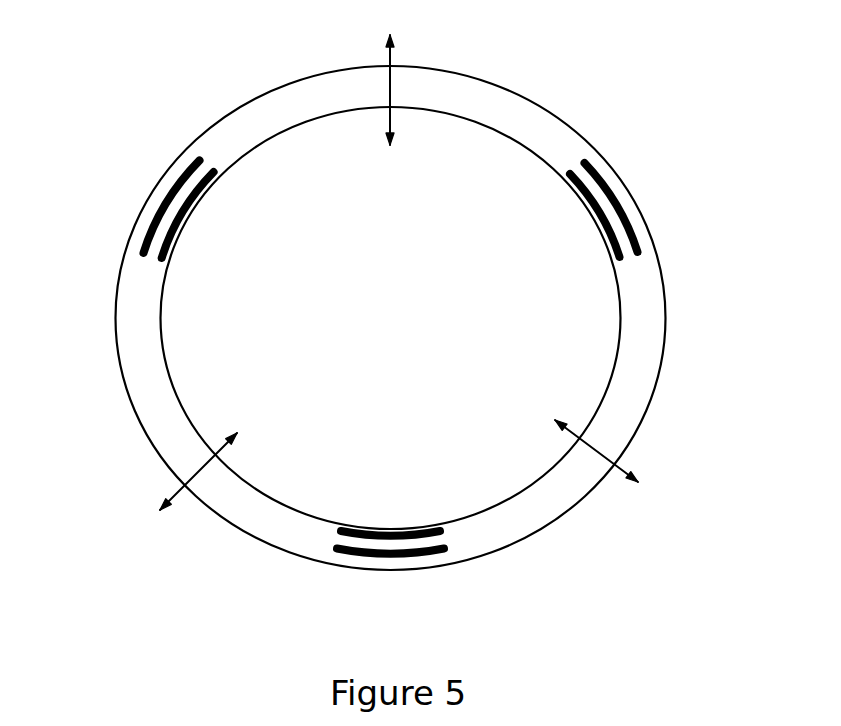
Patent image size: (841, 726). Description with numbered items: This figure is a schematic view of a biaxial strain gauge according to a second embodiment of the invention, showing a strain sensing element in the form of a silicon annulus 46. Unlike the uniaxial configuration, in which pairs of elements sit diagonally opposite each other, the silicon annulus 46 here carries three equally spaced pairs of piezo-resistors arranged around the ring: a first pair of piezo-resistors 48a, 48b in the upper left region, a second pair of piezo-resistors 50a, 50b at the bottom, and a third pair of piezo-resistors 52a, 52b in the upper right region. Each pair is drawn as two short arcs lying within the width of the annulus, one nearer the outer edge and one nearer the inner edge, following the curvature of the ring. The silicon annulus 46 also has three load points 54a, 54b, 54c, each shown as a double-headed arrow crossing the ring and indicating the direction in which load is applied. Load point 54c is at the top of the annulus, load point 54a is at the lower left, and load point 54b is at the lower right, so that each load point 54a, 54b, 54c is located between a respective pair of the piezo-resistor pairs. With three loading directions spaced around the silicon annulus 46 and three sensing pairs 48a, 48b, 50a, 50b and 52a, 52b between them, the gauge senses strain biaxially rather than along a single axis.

The silicon annulus 46 is at (115, 320).
The piezo-resistor 48a is at (162, 202).
The piezo-resistor 48b is at (187, 212).
The piezo-resistor 50a is at (385, 563).
The piezo-resistor 50b is at (387, 540).
The piezo-resistor 52a is at (620, 195).
The piezo-resistor 52b is at (597, 208).
The load point 54a is at (162, 485).
The load point 54b is at (640, 457).
The load point 54c is at (402, 35).